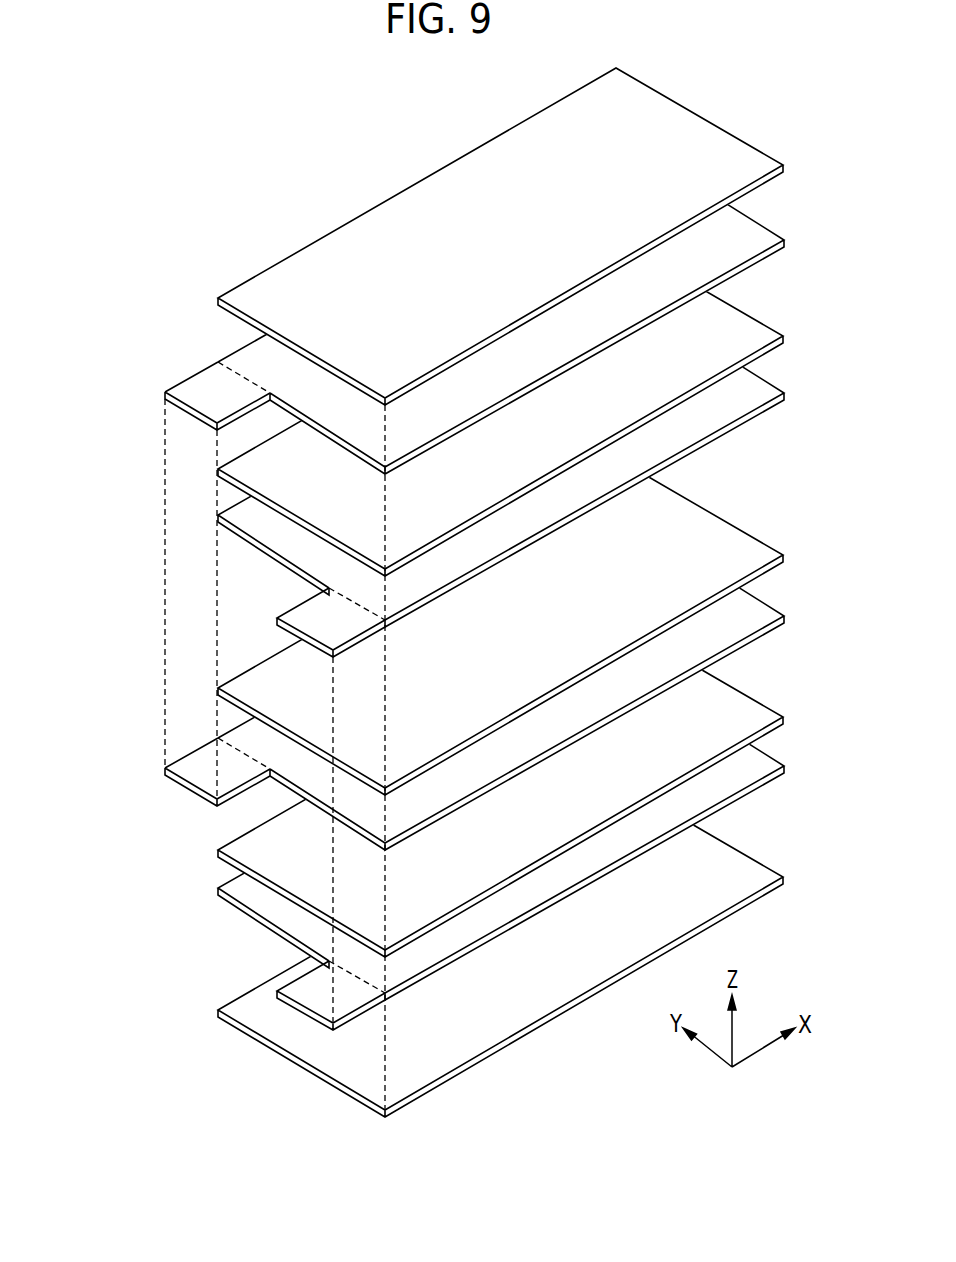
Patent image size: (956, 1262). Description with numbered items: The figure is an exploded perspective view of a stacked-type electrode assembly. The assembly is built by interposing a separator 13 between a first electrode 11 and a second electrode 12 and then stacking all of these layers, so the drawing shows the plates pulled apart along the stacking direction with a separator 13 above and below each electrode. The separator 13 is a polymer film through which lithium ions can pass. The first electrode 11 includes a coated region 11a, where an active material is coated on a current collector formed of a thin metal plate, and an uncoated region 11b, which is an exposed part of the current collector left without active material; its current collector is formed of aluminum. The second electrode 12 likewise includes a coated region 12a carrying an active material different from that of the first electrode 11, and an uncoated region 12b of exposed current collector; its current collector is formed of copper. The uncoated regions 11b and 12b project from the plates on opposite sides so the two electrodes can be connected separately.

The first electrode 11 is at (102, 518).
The coated region 11a is at (280, 528).
The uncoated region 11b is at (320, 618).
The second electrode 12 is at (98, 345).
The coated region 12a is at (360, 418).
The uncoated region 12b is at (228, 388).
The separator 13 is at (288, 285).